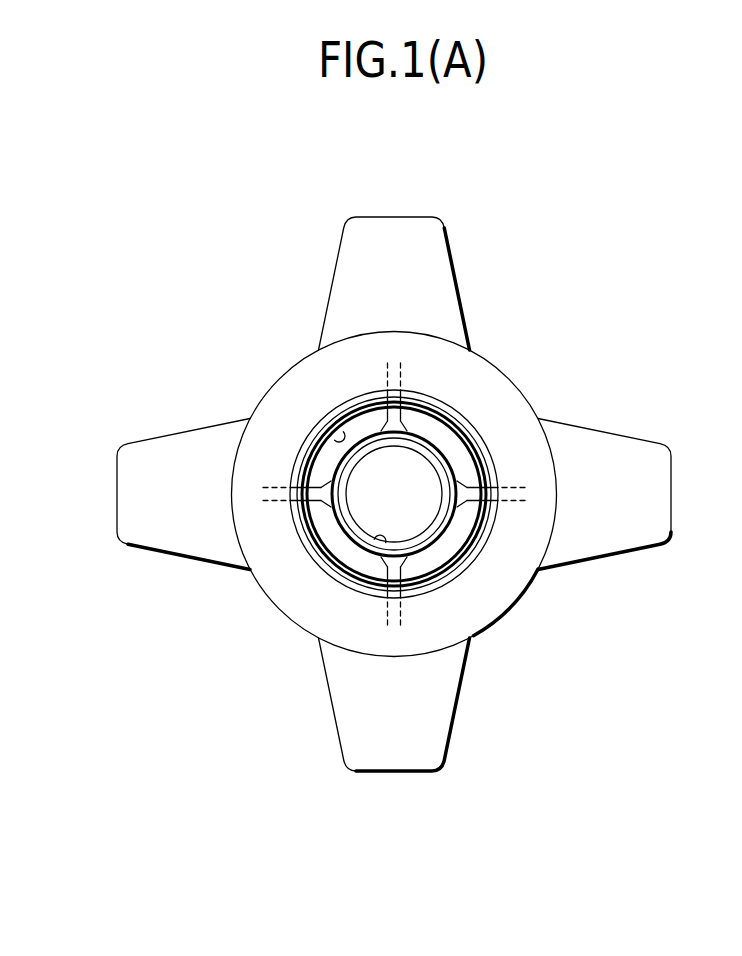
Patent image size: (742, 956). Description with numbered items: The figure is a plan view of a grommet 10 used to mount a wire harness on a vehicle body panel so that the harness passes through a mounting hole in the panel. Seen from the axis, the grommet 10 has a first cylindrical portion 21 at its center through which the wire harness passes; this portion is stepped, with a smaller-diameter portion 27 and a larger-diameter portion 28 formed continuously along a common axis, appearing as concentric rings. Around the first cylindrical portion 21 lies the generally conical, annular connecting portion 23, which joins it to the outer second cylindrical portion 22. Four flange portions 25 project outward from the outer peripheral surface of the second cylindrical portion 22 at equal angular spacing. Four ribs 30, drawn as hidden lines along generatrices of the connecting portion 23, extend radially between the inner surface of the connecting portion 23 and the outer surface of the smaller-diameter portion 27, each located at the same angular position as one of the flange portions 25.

The grommet 10 is at (518, 239).
The first cylindrical portion 21 is at (485, 553).
The second cylindrical portion 22 is at (517, 387).
The connecting portion 23 is at (477, 367).
The flange portions 25 is at (388, 228).
The smaller-diameter portion 27 is at (377, 543).
The larger-diameter portion 28 is at (340, 430).
The ribs 30 is at (405, 380).